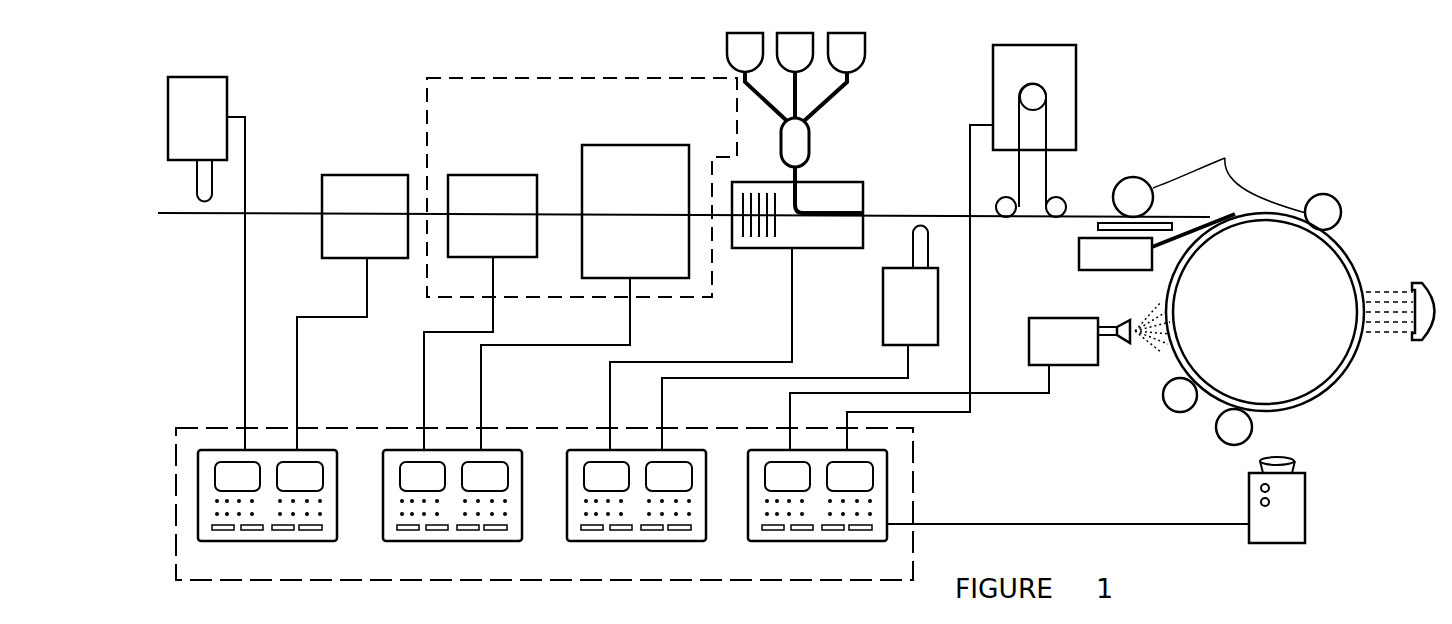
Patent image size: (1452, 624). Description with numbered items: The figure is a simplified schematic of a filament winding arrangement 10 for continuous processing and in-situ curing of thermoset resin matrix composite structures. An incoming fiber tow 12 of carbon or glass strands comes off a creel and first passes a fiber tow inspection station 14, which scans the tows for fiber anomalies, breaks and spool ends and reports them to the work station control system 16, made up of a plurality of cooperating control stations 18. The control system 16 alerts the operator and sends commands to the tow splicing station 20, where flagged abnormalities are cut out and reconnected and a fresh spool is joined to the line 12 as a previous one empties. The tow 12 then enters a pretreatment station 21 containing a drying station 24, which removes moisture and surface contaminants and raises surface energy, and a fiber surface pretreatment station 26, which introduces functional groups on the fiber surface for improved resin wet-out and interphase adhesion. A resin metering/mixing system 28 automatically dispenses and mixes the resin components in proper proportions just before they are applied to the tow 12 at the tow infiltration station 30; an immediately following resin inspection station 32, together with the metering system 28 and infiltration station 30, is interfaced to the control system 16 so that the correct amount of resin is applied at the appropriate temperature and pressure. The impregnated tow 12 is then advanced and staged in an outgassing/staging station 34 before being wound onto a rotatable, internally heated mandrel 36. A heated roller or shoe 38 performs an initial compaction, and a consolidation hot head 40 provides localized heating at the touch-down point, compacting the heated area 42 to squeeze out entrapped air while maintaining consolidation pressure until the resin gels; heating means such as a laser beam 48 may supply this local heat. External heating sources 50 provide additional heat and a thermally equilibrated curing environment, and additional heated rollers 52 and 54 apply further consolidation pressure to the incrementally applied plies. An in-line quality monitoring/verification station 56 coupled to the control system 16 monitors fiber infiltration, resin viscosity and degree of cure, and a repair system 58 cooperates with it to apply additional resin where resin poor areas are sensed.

The filament winding arrangement 10 is at (893, 98).
The fiber tow 12 is at (185, 213).
The fiber tow inspection station 14 is at (207, 129).
The work station control system 16 is at (913, 462).
The control station 18 is at (337, 481).
The tow splicing station 20 is at (376, 207).
The pretreatment station 21 is at (453, 76).
The drying station 24 is at (503, 207).
The fiber surface pretreatment station 26 is at (646, 185).
The resin metering/mixing system 28 is at (823, 110).
The tow infiltration station 30 is at (828, 241).
The resin inspection station 32 is at (920, 313).
The outgassing/staging station 34 is at (1043, 74).
The heated mandrel 36 is at (1265, 312).
The heated roller or shoe 38 is at (1128, 178).
The consolidation hot head 40 is at (1338, 198).
The heated area 42 is at (1112, 271).
The laser beam 48 is at (1170, 247).
The external heating source 50 is at (1441, 345).
The additional roller 52 is at (1162, 388).
The additional roller 54 is at (1235, 447).
The in-line quality monitoring/verification station 56 is at (1289, 537).
The repair system 58 is at (1075, 345).